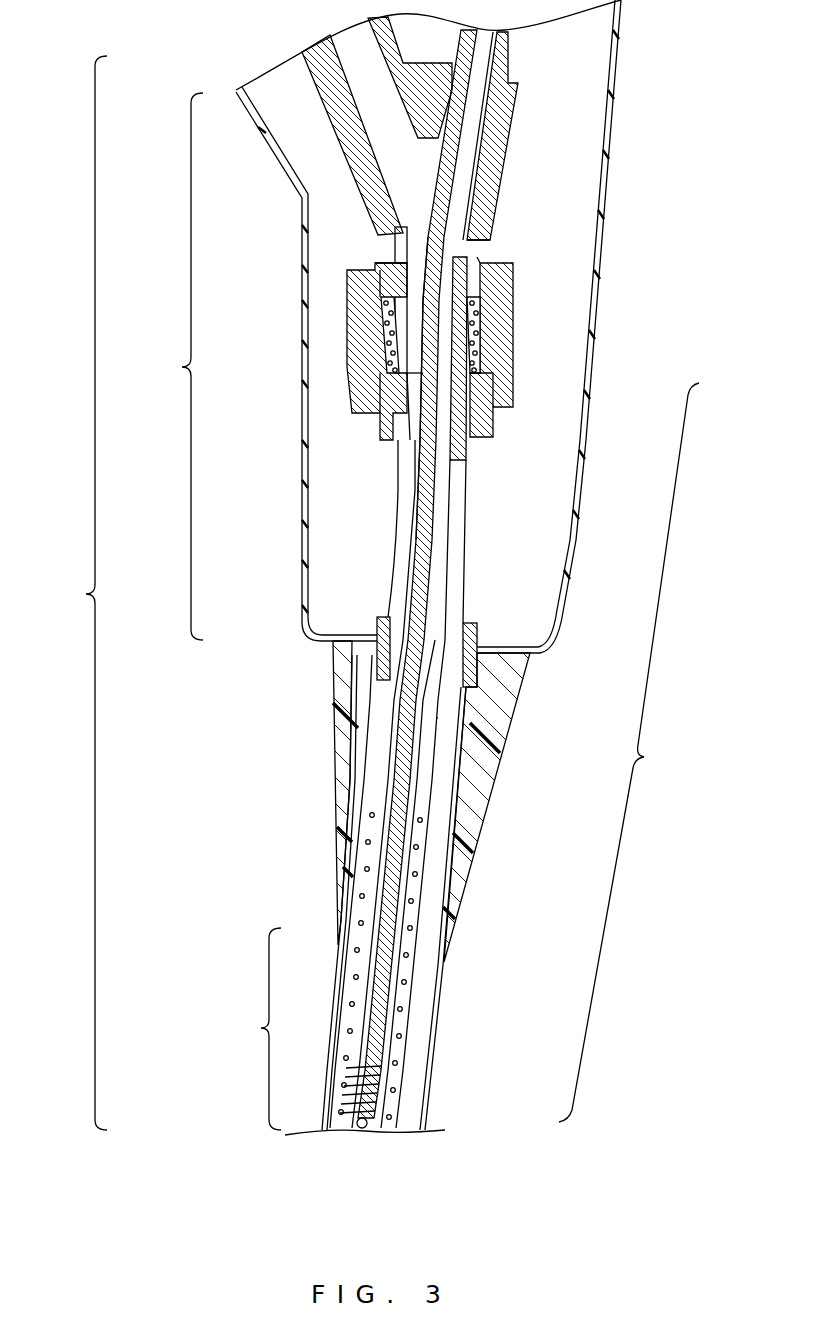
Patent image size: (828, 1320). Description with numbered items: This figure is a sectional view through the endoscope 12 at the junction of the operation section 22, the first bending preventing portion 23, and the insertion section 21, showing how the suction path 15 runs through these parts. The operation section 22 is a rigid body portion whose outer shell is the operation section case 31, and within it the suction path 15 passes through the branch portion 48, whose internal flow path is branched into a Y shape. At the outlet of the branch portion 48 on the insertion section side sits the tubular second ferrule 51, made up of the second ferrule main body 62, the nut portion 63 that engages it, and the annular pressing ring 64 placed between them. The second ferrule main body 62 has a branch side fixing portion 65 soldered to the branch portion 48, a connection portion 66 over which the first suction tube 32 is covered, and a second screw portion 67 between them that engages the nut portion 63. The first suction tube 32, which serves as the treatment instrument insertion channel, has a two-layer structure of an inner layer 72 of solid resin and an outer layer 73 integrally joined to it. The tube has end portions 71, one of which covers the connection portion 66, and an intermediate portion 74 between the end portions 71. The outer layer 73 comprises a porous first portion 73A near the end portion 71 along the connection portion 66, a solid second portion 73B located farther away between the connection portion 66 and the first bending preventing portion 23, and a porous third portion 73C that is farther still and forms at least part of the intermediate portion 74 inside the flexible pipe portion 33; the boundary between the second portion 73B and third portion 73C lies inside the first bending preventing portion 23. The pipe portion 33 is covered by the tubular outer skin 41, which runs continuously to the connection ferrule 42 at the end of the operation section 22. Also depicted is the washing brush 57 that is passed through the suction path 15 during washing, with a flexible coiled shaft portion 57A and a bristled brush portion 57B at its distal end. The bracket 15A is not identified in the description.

The endoscope 12 is at (645, 66).
The suction path 15 is at (455, 510).
The channel proximal portion 15A is at (67, 593).
The insertion section 21 is at (419, 887).
The operation section 22 is at (172, 366).
The first bending preventing portion 23 is at (486, 788).
The operation section case 31 is at (586, 440).
The first suction tube 32 is at (463, 563).
The pipe portion 33 is at (252, 1029).
The outer skin 41 is at (431, 1083).
The connection ferrule 42 is at (383, 617).
The branch portion 48 is at (493, 137).
The second ferrule 51 is at (406, 330).
The washing brush 57 is at (439, 553).
The shaft portion 57A is at (426, 512).
The brush portion 57B is at (373, 1137).
The second ferrule main body 62 is at (378, 280).
The nut portion 63 is at (380, 377).
The pressing ring 64 is at (483, 373).
The branch side fixing portion 65 is at (390, 236).
The connection portion 66 is at (462, 337).
The second screw portion 67 is at (486, 282).
The end portion 71 is at (477, 258).
The inner layer 72 is at (430, 752).
The outer layer 73 is at (438, 717).
The first portion 73A is at (380, 340).
The second portion 73B is at (456, 602).
The third portion 73C is at (410, 965).
The intermediate portion 74 is at (629, 752).